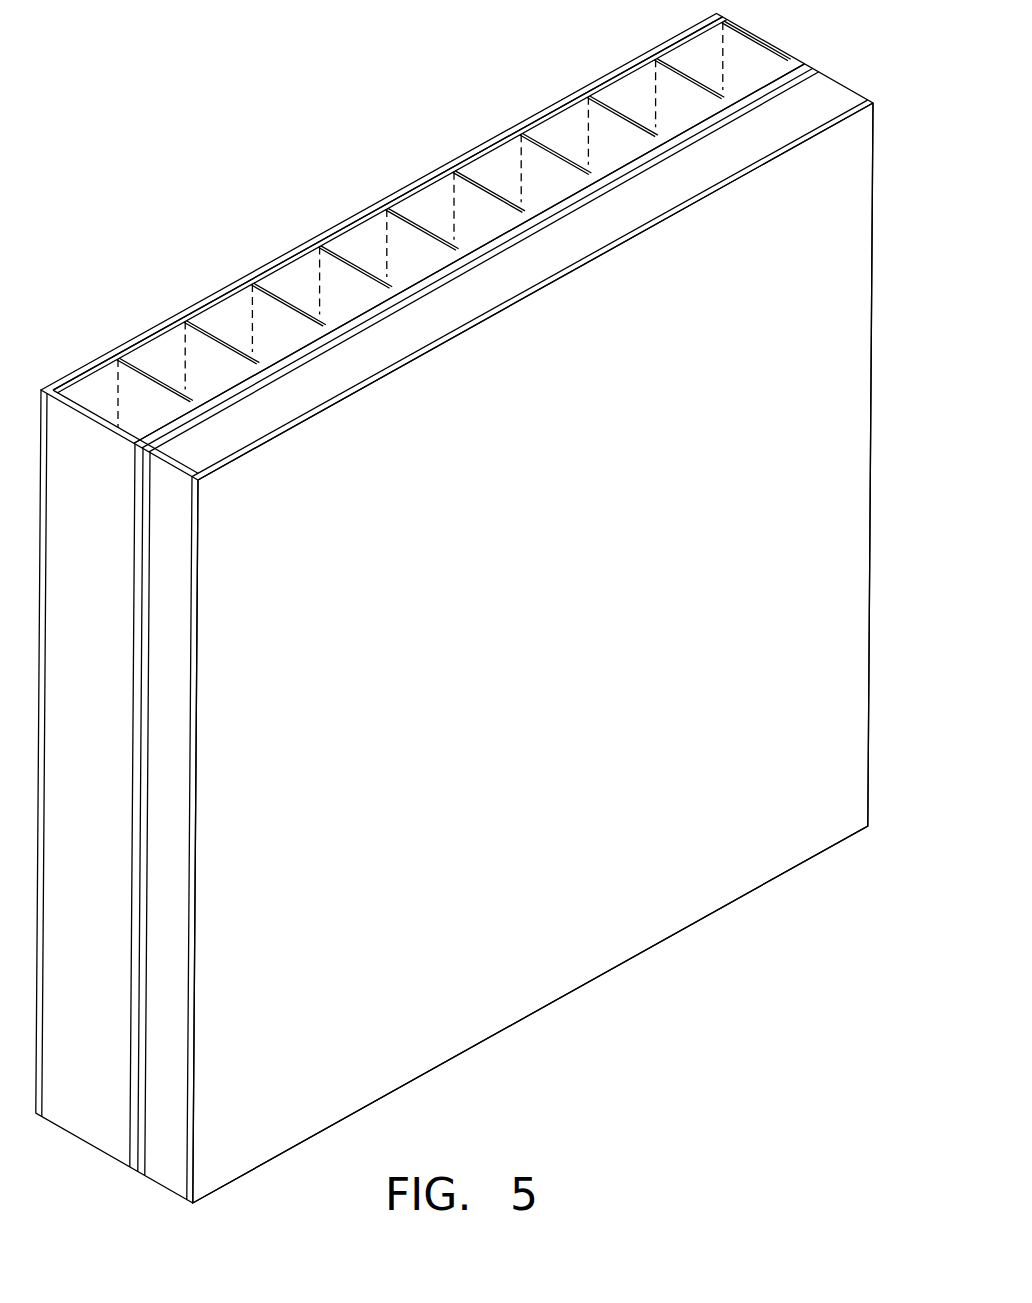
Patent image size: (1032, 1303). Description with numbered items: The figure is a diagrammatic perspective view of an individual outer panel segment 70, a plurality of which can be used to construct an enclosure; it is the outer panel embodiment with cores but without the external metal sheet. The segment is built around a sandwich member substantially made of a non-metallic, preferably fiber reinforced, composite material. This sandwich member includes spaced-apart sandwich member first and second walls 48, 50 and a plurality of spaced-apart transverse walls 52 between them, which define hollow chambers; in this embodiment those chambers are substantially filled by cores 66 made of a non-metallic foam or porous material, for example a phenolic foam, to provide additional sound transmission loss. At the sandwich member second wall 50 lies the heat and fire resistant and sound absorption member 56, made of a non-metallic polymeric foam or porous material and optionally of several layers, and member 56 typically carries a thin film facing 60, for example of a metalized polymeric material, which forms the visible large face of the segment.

The sandwich member first wall 48 is at (290, 258).
The sandwich member second wall 50 is at (414, 278).
The transverse walls 52 is at (217, 333).
The outer panel heat and fire resistant and sound absorption member 56 is at (832, 92).
The thin film facing 60 is at (748, 173).
The cores 66 is at (505, 166).
The outer panel segment 70 is at (772, 963).